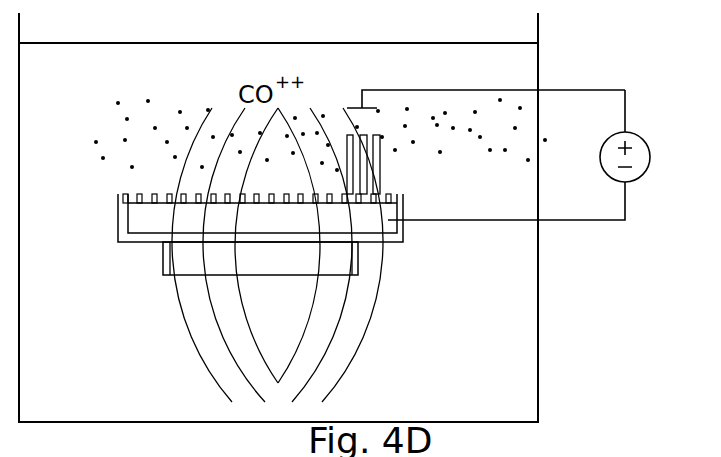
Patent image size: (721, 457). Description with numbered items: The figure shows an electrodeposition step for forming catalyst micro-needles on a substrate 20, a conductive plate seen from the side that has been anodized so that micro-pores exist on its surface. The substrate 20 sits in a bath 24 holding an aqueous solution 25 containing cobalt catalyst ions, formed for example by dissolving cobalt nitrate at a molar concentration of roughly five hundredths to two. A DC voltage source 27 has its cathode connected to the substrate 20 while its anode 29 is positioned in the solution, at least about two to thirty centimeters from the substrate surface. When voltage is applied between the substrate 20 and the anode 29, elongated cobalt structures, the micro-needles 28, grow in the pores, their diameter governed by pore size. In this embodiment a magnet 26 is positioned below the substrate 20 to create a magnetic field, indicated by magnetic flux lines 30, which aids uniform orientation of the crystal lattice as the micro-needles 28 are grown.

The substrate 20 is at (260, 218).
The chamber 24 is at (538, 318).
The plasma / ion gas 25 is at (82, 113).
The magnet 26 is at (335, 265).
The DC voltage source 27 is at (650, 158).
The micro-needles 28 is at (383, 160).
The anode 29 is at (350, 108).
The magnetic flux lines 30 is at (363, 350).